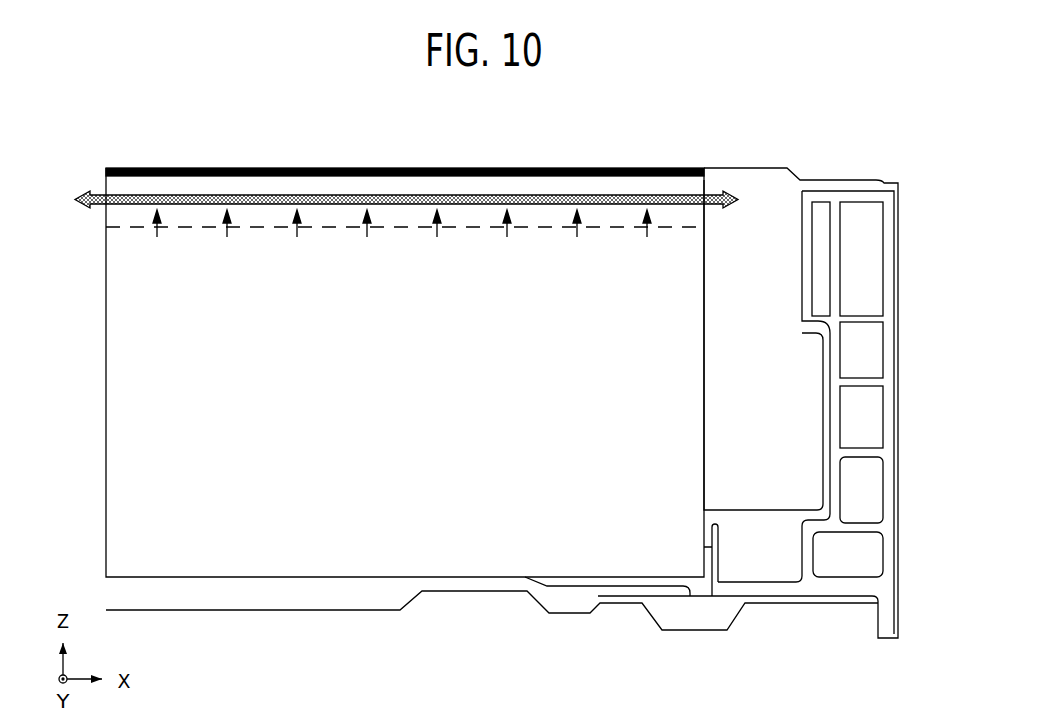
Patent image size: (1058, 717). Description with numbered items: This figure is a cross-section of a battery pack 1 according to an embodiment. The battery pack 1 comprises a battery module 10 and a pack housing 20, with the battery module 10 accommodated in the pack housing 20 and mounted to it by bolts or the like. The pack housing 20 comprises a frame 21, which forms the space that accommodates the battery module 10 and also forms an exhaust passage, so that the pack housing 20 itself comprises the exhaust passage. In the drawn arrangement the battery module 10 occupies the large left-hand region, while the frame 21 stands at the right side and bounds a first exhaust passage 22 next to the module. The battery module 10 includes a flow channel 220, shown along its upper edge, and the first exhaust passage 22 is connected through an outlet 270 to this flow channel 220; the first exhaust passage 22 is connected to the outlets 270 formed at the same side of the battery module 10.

The battery pack 1 is at (403, 129).
The battery module 10 is at (92, 289).
The pack housing 20 is at (908, 337).
The frame 21 is at (837, 180).
The first exhaust passage 22 is at (745, 179).
The flow channel 220 is at (484, 190).
The outlet 270 is at (705, 193).